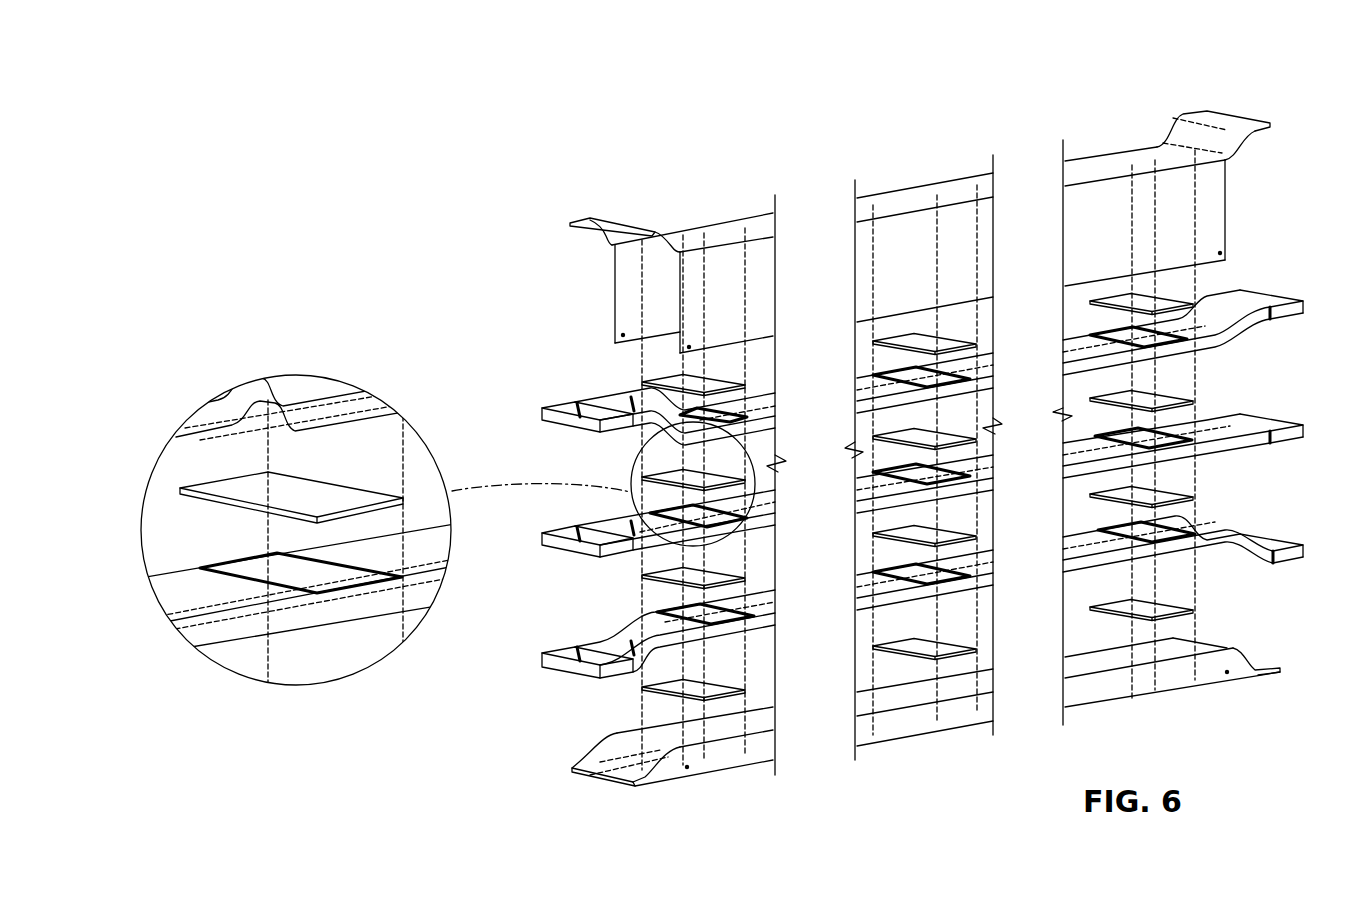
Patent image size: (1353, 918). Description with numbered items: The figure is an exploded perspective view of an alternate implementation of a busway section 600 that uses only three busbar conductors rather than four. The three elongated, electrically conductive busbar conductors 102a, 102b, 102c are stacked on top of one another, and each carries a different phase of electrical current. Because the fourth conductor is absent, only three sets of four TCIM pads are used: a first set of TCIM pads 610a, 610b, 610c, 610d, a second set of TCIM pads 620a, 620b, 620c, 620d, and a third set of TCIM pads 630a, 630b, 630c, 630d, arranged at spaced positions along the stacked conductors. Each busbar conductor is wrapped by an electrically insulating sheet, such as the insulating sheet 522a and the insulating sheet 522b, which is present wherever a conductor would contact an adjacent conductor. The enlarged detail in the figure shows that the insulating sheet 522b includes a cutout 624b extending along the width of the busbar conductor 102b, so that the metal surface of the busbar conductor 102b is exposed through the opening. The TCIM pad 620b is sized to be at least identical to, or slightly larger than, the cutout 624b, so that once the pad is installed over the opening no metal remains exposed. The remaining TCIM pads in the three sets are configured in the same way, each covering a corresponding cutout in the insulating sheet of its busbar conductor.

The busway section 600 is at (1175, 92).
The busbar conductor 102a is at (540, 412).
The busbar conductor 102b is at (540, 537).
The busbar conductor 102c is at (540, 659).
The insulating sheet 522a is at (208, 413).
The insulating sheet 522b is at (177, 597).
The TCIM pad 610a is at (902, 340).
The TCIM pad 610b is at (902, 432).
The TCIM pad 610c is at (902, 530).
The TCIM pad 610d is at (902, 645).
The TCIM pad 620a is at (670, 380).
The TCIM pad 620b is at (665, 478).
The TCIM pad 620c is at (660, 580).
The TCIM pad 620d is at (660, 692).
The cutout 624b is at (258, 568).
The TCIM pad 630a is at (1120, 302).
The TCIM pad 630b is at (1120, 398).
The TCIM pad 630c is at (1120, 497).
The TCIM pad 630d is at (1120, 610).